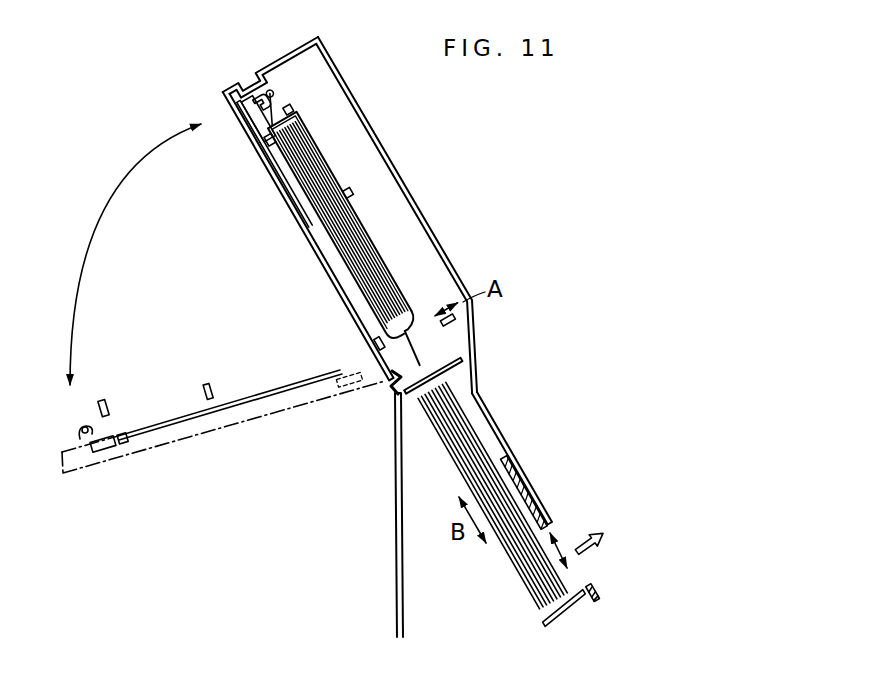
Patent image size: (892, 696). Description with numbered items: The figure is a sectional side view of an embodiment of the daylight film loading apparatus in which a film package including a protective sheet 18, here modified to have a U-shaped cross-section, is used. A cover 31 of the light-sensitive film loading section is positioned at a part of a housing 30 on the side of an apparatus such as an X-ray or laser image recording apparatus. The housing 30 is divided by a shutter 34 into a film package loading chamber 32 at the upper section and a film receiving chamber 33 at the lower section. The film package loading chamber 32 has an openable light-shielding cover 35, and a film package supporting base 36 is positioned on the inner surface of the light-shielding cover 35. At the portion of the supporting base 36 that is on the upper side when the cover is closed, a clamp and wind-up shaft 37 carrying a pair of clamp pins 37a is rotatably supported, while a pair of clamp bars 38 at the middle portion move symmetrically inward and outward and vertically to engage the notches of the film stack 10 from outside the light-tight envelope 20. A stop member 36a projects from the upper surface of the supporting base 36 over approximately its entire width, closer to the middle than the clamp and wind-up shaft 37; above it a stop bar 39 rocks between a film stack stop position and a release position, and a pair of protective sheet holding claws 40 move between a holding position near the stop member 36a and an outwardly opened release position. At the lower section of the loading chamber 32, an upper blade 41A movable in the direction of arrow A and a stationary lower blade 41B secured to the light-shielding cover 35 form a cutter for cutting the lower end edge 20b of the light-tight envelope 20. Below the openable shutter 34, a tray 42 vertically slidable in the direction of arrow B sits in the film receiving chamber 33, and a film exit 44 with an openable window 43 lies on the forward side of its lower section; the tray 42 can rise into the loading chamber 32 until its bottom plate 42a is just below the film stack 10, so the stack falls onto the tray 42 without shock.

The film stack 10 is at (336, 217).
The protective sheet 18 is at (323, 165).
The light-tight envelope 20 is at (300, 120).
The lower end edge of the light-tight envelope 20b is at (420, 355).
The housing 30 is at (396, 512).
The cover 31 is at (396, 170).
The film package loading chamber 32 is at (318, 86).
The film receiving chamber 33 is at (487, 420).
The shutter 34 is at (462, 362).
The light-shielding cover 35 is at (327, 280).
The film package supporting base 36 is at (289, 193).
The stop member 36a is at (257, 122).
The clamp and wind-up shaft 37 is at (249, 93).
The clamp pins 37a is at (270, 93).
The clamp bars 38 is at (355, 195).
The stop bar 39 is at (292, 107).
The protective sheet holding claws 40 is at (262, 143).
The upper blade 41A is at (432, 323).
The lower blade 41B is at (371, 345).
The tray 42 is at (498, 550).
The bottom plate 42a is at (578, 605).
The openable window 43 is at (527, 485).
The film exit 44 is at (567, 541).